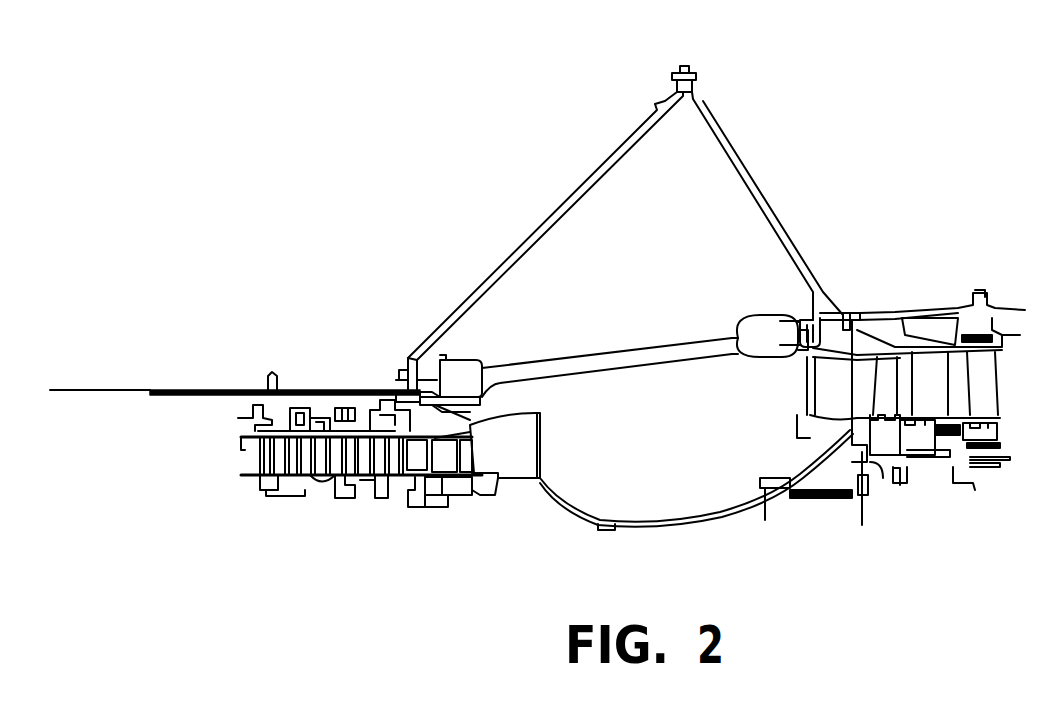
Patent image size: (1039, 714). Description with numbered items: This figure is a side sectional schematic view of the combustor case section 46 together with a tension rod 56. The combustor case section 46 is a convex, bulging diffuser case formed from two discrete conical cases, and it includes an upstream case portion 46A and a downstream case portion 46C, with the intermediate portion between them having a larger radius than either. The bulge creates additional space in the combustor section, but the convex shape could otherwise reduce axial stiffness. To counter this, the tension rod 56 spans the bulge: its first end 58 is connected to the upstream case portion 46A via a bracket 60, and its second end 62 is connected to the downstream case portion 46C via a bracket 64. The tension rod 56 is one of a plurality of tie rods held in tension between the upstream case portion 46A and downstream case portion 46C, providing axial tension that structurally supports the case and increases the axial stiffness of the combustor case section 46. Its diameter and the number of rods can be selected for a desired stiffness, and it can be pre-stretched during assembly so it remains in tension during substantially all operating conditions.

The combustor case section 46 is at (792, 155).
The upstream case portion 46A is at (403, 358).
The downstream case portion 46C is at (823, 283).
The tension rod 56 is at (623, 370).
The first end 58 is at (512, 372).
The bracket 60 is at (455, 388).
The second end 62 is at (722, 358).
The bracket 64 is at (772, 359).